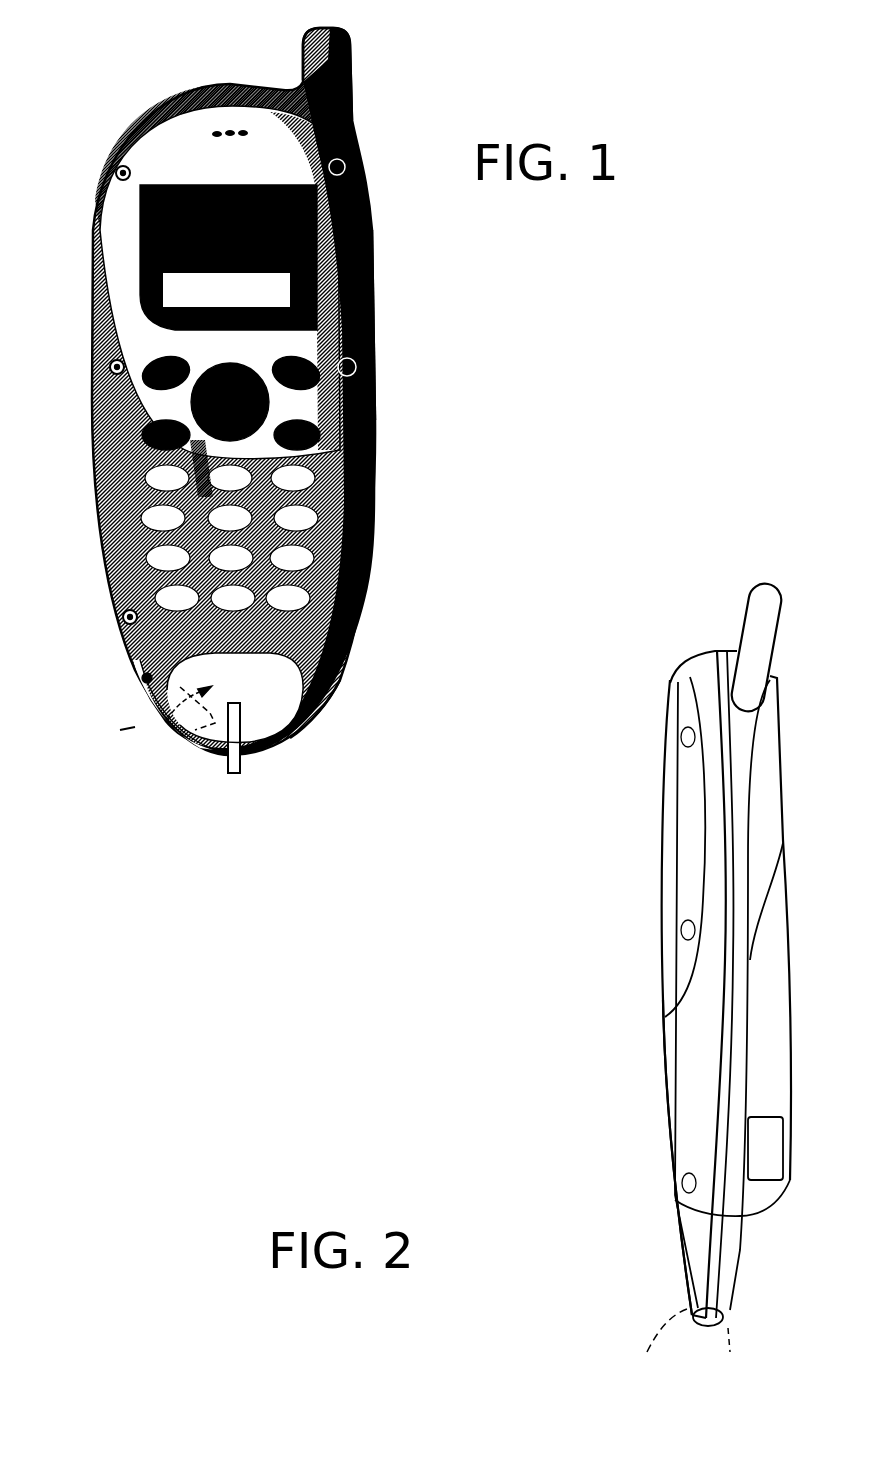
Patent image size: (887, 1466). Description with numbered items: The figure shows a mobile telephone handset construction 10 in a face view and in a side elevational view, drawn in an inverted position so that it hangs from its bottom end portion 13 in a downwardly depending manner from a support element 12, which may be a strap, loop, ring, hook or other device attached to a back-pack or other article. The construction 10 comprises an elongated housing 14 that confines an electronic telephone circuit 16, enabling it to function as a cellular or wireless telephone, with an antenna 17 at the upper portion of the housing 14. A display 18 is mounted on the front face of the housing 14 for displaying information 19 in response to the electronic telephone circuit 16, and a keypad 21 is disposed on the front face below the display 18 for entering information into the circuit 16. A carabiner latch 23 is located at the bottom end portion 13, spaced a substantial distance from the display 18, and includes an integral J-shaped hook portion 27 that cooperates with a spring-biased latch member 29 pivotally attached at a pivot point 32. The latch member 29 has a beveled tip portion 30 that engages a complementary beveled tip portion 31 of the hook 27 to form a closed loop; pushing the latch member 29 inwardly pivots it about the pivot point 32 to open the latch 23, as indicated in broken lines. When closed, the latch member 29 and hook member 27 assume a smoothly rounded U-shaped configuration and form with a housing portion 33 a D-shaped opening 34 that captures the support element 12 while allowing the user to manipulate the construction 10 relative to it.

In FIG. 1, the mobile telephone handset construction 10 is at (445, 257).
In FIG. 2, the mobile telephone handset construction 10 is at (485, 1140).
In FIG. 1, the support element 12 is at (243, 770).
In FIG. 2, the support element 12 is at (730, 1312).
In FIG. 1, the bottom end portion 13 is at (362, 674).
In FIG. 2, the bottom end portion 13 is at (620, 1241).
In FIG. 1, the elongated housing 14 is at (97, 522).
In FIG. 2, the elongated housing 14 is at (663, 1072).
In FIG. 1, the electronic telephone circuit 16 is at (200, 470).
In FIG. 1, the antenna 17 is at (312, 66).
In FIG. 2, the antenna 17 is at (757, 625).
In FIG. 1, the display 18 is at (140, 235).
In FIG. 1, the information 19 is at (170, 292).
In FIG. 1, the keypad 21 is at (140, 577).
In FIG. 1, the carabiner latch 23 is at (150, 738).
In FIG. 2, the carabiner latch 23 is at (751, 1251).
In FIG. 1, the hook portion 27 is at (327, 693).
In FIG. 1, the latch member 29 is at (145, 692).
In FIG. 1, the beveled tip portion 30 is at (175, 738).
In FIG. 1, the beveled tip portion 31 is at (198, 747).
In FIG. 1, the pivot point 32 is at (142, 670).
In FIG. 1, the housing portion 33 is at (215, 652).
In FIG. 1, the opening 34 is at (267, 710).